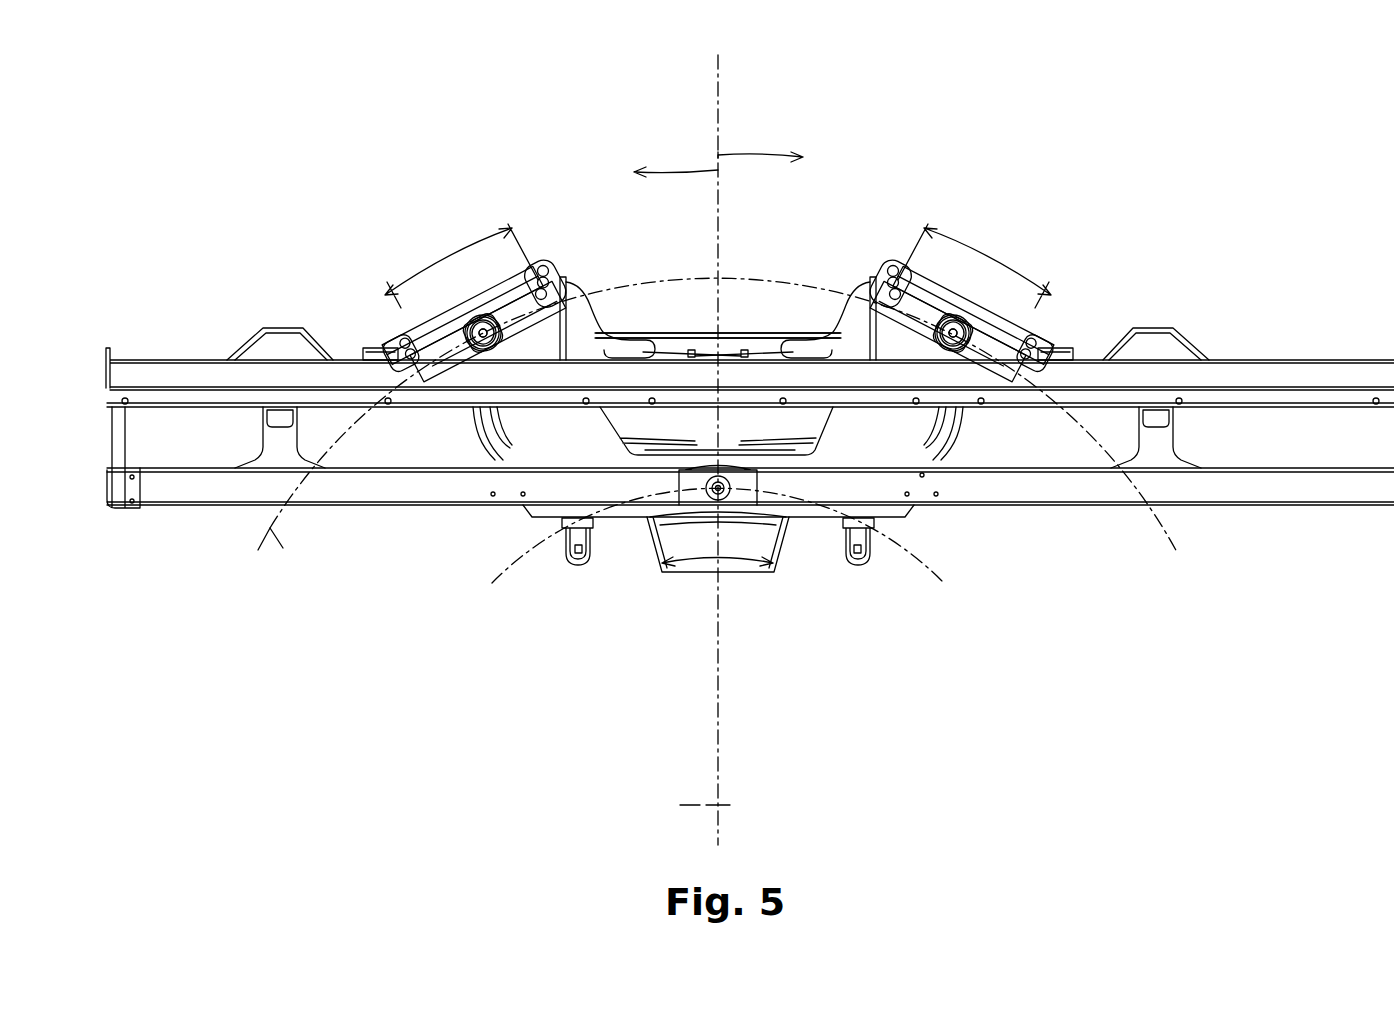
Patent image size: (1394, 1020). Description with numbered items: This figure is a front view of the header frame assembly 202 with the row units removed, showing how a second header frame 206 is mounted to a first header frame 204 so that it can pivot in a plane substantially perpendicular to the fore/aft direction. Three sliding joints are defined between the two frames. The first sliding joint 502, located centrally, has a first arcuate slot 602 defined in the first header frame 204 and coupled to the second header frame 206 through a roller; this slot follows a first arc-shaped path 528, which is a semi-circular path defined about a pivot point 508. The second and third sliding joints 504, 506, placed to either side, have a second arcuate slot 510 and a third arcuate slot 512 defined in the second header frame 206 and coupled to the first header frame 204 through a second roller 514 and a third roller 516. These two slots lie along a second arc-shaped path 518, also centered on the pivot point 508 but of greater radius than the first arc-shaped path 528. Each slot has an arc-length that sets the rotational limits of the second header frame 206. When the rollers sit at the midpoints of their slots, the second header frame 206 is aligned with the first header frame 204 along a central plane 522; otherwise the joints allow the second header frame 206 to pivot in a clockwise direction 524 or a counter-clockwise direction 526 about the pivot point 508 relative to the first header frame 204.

The header frame assembly 202 is at (487, 124).
The first header frame 204 is at (857, 322).
The second header frame 206 is at (194, 352).
The first sliding joint 502 is at (737, 484).
The second sliding joint 504 is at (490, 302).
The third sliding joint 506 is at (942, 302).
The pivot point 508 is at (732, 805).
The second arcuate slot 510 is at (566, 278).
The third arcuate slot 512 is at (898, 300).
The second slider or roller 514 is at (484, 347).
The third slider or roller 516 is at (955, 347).
The second arc-shaped path 518 is at (270, 528).
The central plane 522 is at (722, 68).
The clockwise direction 524 is at (760, 152).
The counter-clockwise direction 526 is at (680, 168).
The first arc-shaped path 528 is at (510, 568).
The first arcuate slot 602 is at (640, 528).